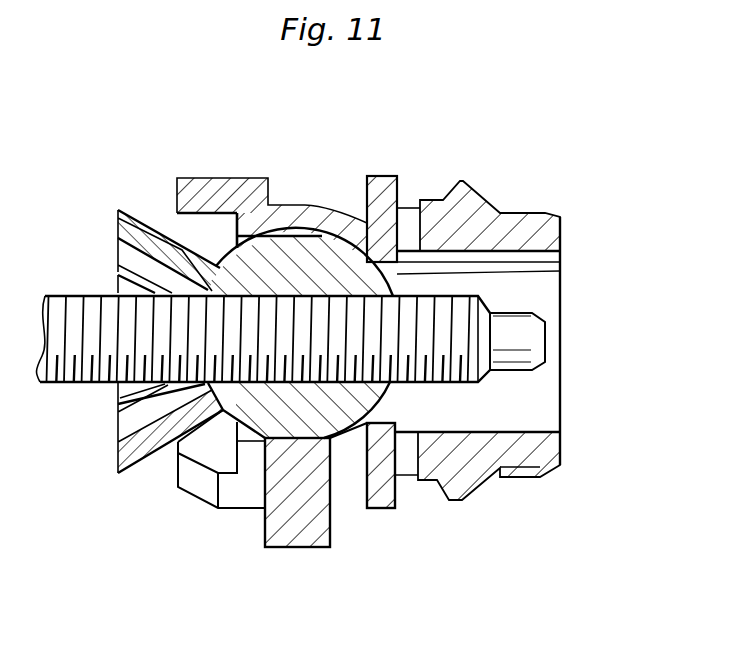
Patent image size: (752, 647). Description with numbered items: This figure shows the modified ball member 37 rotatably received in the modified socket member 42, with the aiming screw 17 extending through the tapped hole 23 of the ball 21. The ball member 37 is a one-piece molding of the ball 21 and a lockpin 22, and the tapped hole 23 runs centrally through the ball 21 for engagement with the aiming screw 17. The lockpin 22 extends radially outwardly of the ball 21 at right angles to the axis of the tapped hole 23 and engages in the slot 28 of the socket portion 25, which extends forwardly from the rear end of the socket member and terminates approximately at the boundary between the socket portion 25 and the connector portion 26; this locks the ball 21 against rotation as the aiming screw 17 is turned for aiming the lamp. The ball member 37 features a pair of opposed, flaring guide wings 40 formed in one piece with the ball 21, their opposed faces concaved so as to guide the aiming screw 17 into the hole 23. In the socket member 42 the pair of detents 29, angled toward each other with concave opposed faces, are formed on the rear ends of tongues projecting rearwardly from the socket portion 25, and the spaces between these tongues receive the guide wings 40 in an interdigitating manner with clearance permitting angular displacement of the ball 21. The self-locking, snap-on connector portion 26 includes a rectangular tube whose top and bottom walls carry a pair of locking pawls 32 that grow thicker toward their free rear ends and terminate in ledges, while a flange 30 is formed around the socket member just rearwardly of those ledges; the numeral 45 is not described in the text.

The aiming screw 17 is at (520, 337).
The ball 21 is at (322, 240).
The lockpin 22 is at (296, 537).
The tapped hole 23 is at (243, 297).
The socket portion 25 is at (283, 212).
The connector portion 26 is at (555, 212).
The slot 28 is at (235, 498).
The detents 29 is at (122, 389).
The flange 30 is at (376, 508).
The locking pawls 32 is at (464, 184).
The modified ball member 37 is at (293, 238).
The guide wings 40 is at (152, 235).
The modified socket member 42 is at (369, 184).
The annular gap 45 is at (357, 252).